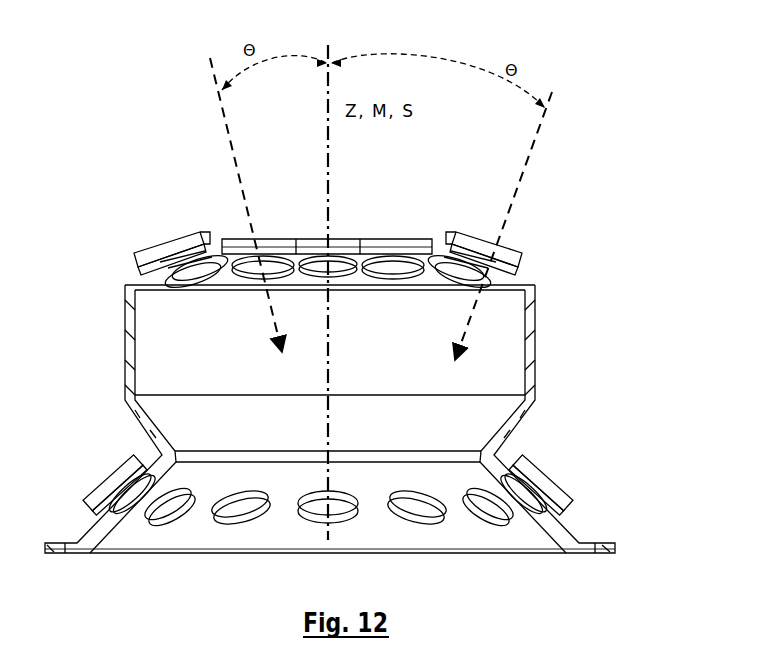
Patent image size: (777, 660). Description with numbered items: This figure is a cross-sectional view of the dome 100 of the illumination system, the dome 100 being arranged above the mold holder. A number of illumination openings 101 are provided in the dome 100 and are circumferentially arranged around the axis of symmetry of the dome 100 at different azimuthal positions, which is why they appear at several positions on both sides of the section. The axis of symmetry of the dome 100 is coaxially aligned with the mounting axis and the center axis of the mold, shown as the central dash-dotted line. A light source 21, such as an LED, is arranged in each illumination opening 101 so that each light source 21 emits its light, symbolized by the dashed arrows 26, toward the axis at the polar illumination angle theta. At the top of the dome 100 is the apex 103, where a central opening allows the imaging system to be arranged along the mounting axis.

The dashed arrows 26 is at (228, 135).
The dome 100 is at (548, 396).
The illumination openings 101 is at (158, 249).
The apex 103 is at (348, 222).
The light sources 21 is at (522, 262).